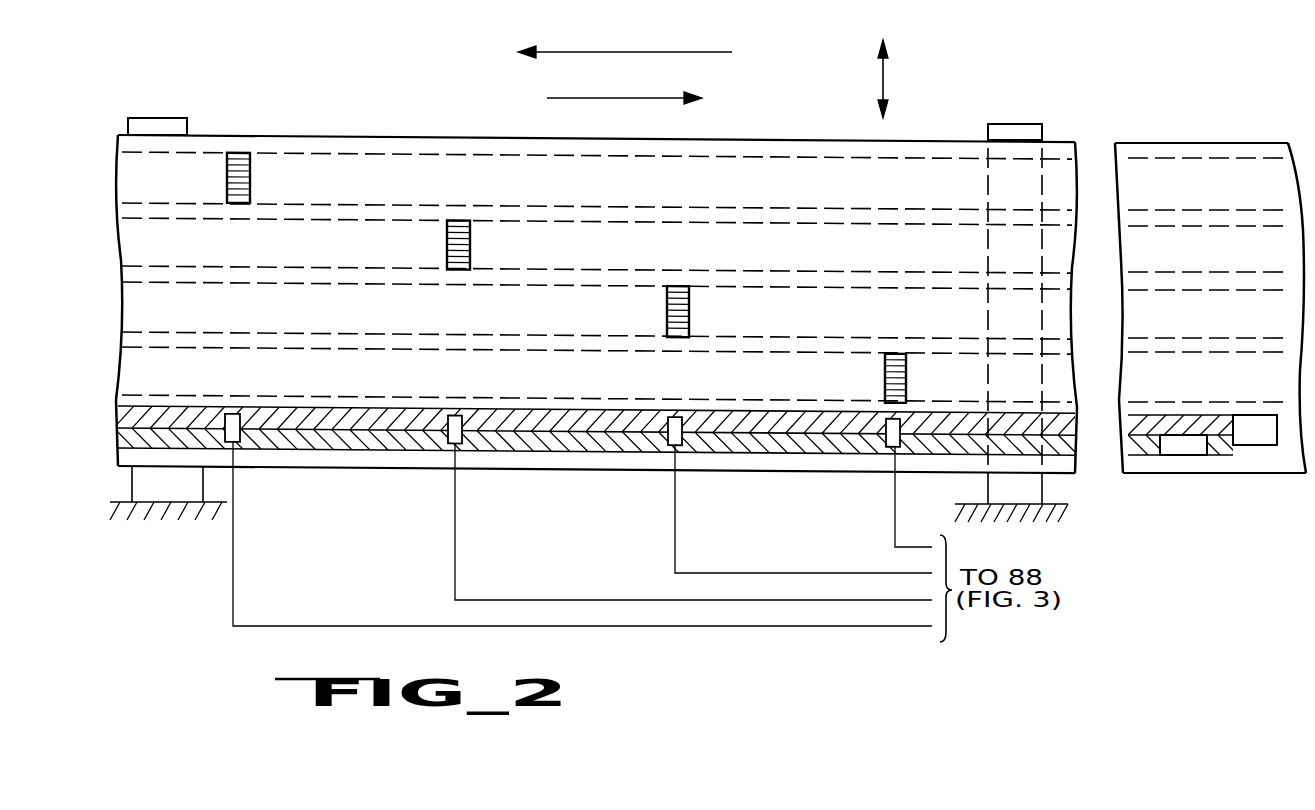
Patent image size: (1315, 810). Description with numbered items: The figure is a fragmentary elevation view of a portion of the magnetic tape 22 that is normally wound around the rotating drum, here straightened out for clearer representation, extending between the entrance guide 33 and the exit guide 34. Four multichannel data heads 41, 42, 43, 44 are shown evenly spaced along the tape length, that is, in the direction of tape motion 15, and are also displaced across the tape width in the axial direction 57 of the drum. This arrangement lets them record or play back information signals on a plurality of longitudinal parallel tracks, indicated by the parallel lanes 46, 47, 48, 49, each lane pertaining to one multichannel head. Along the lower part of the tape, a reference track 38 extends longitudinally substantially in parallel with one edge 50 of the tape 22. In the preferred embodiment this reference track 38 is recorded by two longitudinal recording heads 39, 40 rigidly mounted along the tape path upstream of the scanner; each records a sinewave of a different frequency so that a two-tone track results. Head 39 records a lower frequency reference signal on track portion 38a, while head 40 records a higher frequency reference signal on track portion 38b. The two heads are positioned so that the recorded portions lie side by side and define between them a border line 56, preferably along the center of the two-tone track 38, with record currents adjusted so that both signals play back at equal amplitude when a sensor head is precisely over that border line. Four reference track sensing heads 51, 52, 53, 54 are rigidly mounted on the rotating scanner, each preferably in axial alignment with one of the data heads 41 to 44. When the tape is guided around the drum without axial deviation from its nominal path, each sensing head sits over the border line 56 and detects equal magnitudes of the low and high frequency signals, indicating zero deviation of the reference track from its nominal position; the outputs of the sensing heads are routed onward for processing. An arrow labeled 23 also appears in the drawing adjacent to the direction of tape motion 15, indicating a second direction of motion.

The direction of tape motion 15 is at (598, 52).
The magnetic tape 22 is at (1060, 142).
The direction of belt travel 23 is at (651, 97).
The entrance guide 33 is at (174, 120).
The exit guide 34 is at (1018, 124).
The reference track 38 is at (615, 433).
The track portion 38a is at (1057, 418).
The track portion 38b is at (1060, 448).
The longitudinal recording head 39 is at (1255, 420).
The longitudinal recording head 40 is at (1178, 446).
The multichannel data head 41 is at (906, 376).
The multichannel data head 42 is at (689, 312).
The multichannel data head 43 is at (470, 243).
The multichannel data head 44 is at (250, 178).
The parallel lane 46 is at (858, 392).
The parallel lane 47 is at (858, 324).
The parallel lane 48 is at (858, 256).
The parallel lane 49 is at (858, 193).
The tape edge 50 is at (265, 468).
The reference track sensing head 51 is at (890, 447).
The reference track sensing head 52 is at (680, 444).
The reference track sensing head 53 is at (460, 442).
The reference track sensing head 54 is at (236, 413).
The border line 56 is at (565, 430).
The axial direction 57 is at (886, 78).